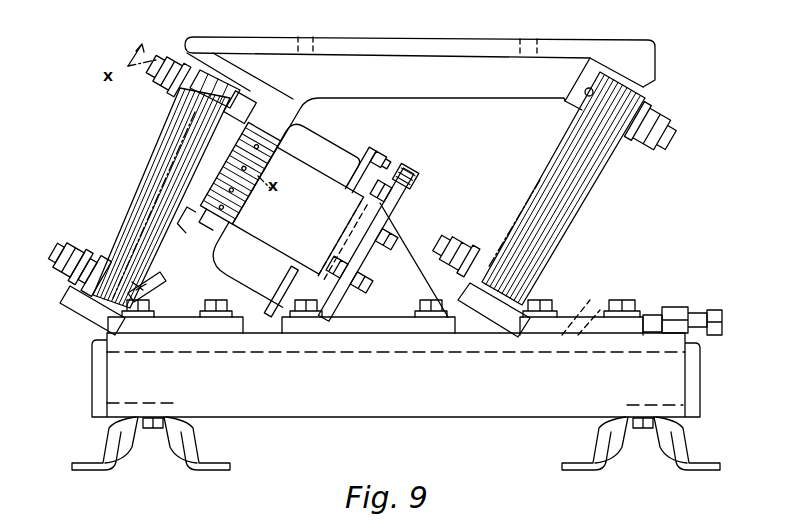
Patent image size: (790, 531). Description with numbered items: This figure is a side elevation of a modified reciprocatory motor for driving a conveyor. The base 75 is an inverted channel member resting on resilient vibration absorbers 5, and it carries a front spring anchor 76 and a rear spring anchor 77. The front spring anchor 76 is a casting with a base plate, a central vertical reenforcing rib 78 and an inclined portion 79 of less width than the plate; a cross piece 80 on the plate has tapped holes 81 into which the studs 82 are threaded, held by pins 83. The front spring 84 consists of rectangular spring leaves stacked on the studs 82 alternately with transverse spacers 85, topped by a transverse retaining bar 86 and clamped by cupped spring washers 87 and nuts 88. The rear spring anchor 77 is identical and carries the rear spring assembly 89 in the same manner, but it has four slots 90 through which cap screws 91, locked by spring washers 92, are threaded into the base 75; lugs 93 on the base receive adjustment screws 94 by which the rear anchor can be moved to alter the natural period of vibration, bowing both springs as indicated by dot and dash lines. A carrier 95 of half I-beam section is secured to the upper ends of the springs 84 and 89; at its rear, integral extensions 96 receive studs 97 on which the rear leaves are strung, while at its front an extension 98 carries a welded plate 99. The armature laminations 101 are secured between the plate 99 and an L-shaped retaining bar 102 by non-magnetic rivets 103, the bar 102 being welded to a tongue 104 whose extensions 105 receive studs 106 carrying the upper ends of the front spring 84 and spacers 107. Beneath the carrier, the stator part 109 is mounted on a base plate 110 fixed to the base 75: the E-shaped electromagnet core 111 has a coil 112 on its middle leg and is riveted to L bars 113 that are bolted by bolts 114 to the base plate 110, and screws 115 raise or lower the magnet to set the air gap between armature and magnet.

The vibration absorber 5 is at (185, 446).
The base 75 is at (112, 368).
The front spring anchor 76 is at (180, 316).
The rear spring anchor 77 is at (556, 295).
The central vertical reenforcing rib 78 is at (152, 289).
The inclined portion 79 is at (80, 308).
The cross piece 80 is at (138, 279).
The holes 81 is at (141, 286).
The studs 82 is at (60, 244).
The pins 83 is at (133, 298).
The front spring 84 is at (143, 173).
The transverse spacers 85 is at (105, 243).
The transverse retaining bar 86 is at (65, 281).
The cupped spring washers 87 is at (57, 268).
The nuts 88 is at (52, 258).
The rear spring assembly 89 is at (585, 200).
The slots 90 is at (585, 306).
The cap screws 91 is at (552, 307).
The spring washers 92 is at (648, 313).
The lugs 93 is at (676, 308).
The adjustment screws 94 is at (712, 311).
The carrier 95 is at (410, 47).
The extensions 96 is at (576, 100).
The studs 97 is at (670, 145).
The extension 98 is at (258, 92).
The plate 99 is at (296, 108).
The armature laminations 101 is at (247, 194).
The L-shaped retaining bar 102 is at (200, 227).
The non-magnetic rivets 103 is at (214, 224).
The tongue 104 is at (186, 224).
The extensions 105 is at (249, 108).
The studs 106 is at (160, 60).
The spacers 107 is at (187, 113).
The stator part 109 is at (372, 144).
The base plate 110 is at (414, 182).
The electromagnet core 111 is at (311, 166).
The coil 112 is at (333, 141).
The L bars 113 is at (384, 178).
The bolts 114 is at (340, 210).
The screws 115 is at (395, 252).